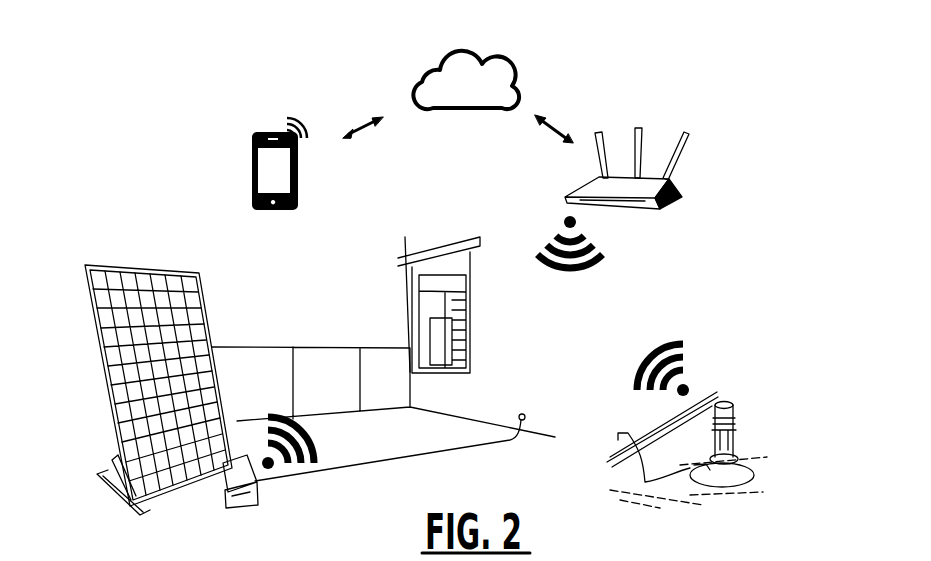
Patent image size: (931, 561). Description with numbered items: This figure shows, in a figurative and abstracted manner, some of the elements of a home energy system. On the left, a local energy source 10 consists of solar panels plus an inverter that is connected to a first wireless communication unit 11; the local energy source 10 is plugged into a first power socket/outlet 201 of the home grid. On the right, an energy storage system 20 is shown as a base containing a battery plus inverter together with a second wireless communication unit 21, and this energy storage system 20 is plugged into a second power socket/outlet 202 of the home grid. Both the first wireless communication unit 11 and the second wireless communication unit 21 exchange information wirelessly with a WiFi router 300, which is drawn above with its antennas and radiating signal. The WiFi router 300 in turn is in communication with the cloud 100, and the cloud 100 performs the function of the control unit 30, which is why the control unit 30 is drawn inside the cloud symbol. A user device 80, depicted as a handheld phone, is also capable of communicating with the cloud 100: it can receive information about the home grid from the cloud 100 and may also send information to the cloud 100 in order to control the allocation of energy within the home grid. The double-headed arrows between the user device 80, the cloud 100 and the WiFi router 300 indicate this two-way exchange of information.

The local energy source 10 is at (158, 377).
The first wireless communication unit 11 is at (268, 485).
The energy storage system 20 is at (746, 445).
The second wireless communication unit 21 is at (680, 361).
The control unit 30 is at (466, 80).
The user device 80 is at (278, 144).
The cloud 100 is at (458, 73).
The first power socket/outlet 201 is at (404, 433).
The second power socket/outlet 202 is at (664, 450).
The WiFi router 300 is at (614, 198).